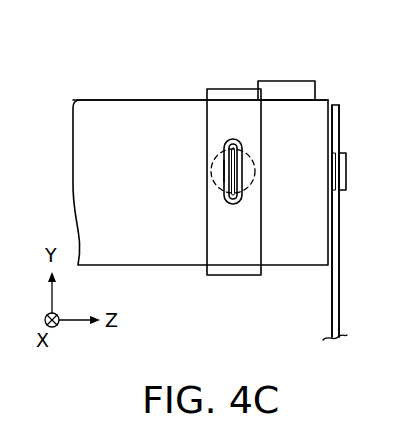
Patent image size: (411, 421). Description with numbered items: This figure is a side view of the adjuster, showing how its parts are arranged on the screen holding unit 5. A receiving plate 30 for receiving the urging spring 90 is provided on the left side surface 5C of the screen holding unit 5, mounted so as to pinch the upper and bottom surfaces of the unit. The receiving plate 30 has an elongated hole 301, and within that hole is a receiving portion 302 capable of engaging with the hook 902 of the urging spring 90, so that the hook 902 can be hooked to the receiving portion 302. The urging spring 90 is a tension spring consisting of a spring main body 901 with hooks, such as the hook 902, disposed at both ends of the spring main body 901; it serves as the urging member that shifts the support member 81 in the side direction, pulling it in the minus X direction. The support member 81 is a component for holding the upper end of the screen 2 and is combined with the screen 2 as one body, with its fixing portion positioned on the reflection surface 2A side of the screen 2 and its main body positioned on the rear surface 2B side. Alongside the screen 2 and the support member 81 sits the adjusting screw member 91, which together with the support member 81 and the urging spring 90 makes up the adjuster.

The screen holding unit 5 is at (180, 100).
The left side surface 5C is at (145, 107).
The receiving plate 30 is at (239, 76).
The adjusting screw member 91 is at (297, 72).
The elongated hole 301 is at (233, 147).
The receiving portion 302 is at (236, 168).
The urging spring 90 is at (138, 135).
The spring main body 901 is at (212, 154).
The hook 902 is at (223, 185).
The screen 2 is at (341, 126).
The reflection surface 2A is at (341, 325).
The rear surface 2B is at (331, 325).
The support member 81 is at (352, 172).